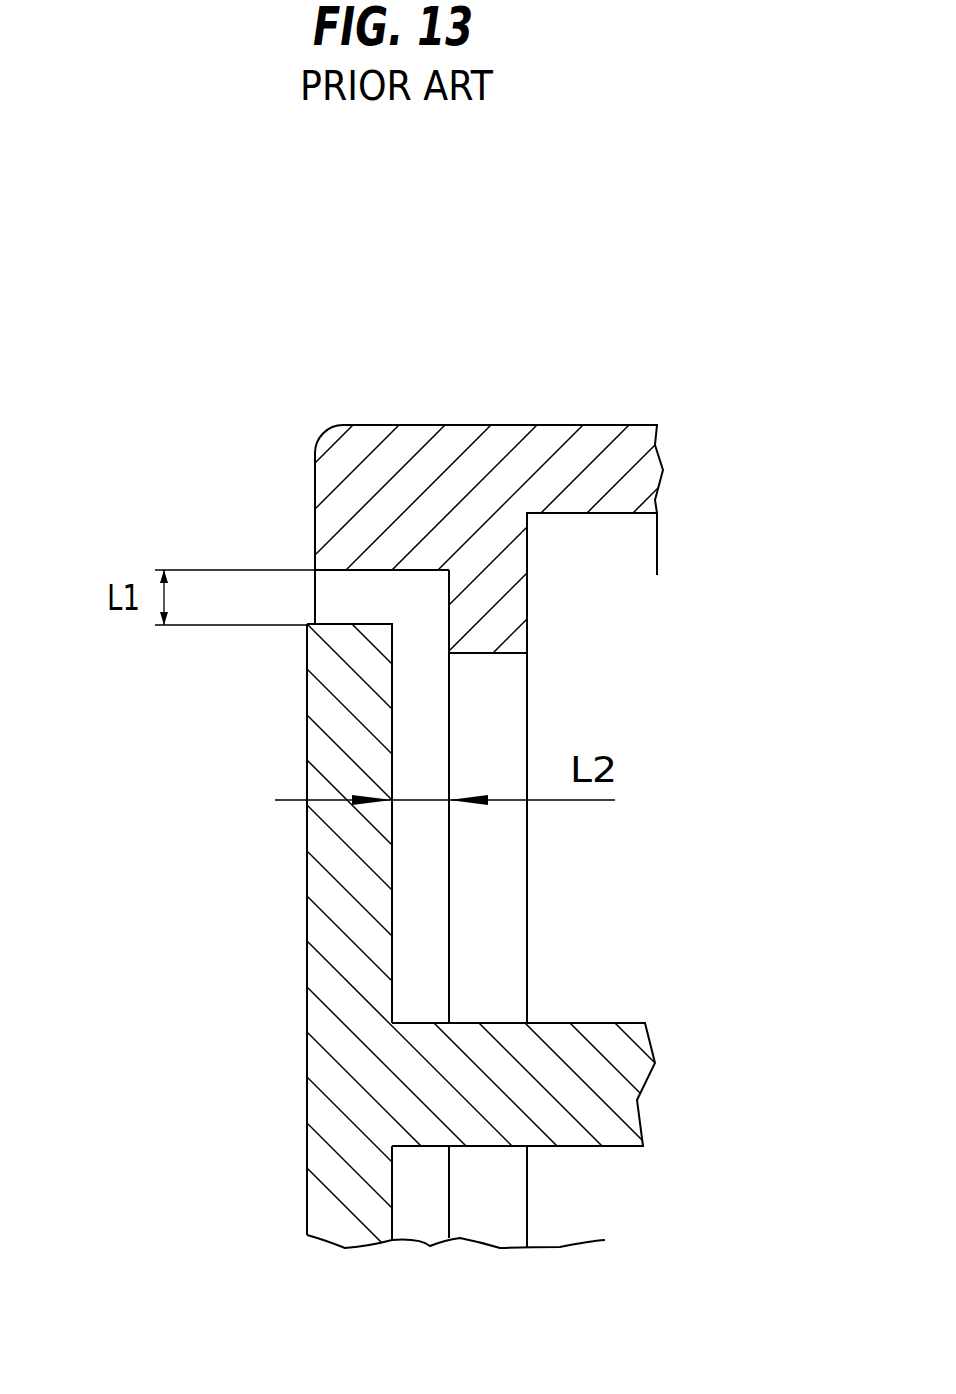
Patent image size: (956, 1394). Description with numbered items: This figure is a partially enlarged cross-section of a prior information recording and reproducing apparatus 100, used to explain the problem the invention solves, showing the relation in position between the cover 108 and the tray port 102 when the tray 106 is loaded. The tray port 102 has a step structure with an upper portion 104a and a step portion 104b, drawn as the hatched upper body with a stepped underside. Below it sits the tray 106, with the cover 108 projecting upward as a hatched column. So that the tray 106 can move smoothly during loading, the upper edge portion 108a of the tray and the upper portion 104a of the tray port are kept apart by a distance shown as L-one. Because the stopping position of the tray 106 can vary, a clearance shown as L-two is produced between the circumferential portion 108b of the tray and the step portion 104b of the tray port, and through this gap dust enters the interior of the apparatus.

The prior art device 100 is at (592, 425).
The holder member 102 is at (315, 505).
The upper portion 104a is at (386, 575).
The step portion 104b is at (452, 600).
The tray 106 is at (270, 1075).
The cover 108 is at (337, 908).
The upper edge portion 108a is at (373, 625).
The circumferential portion 108b is at (392, 668).